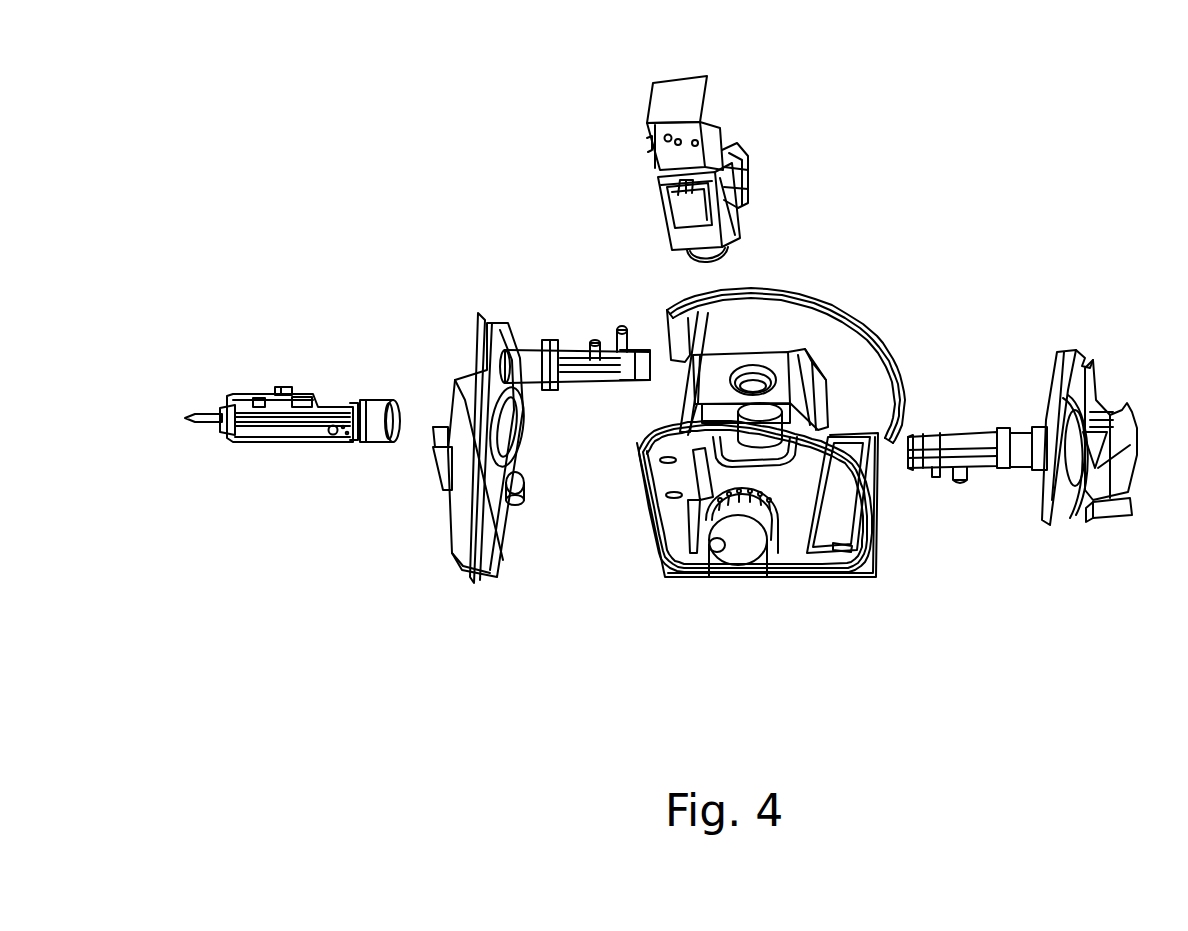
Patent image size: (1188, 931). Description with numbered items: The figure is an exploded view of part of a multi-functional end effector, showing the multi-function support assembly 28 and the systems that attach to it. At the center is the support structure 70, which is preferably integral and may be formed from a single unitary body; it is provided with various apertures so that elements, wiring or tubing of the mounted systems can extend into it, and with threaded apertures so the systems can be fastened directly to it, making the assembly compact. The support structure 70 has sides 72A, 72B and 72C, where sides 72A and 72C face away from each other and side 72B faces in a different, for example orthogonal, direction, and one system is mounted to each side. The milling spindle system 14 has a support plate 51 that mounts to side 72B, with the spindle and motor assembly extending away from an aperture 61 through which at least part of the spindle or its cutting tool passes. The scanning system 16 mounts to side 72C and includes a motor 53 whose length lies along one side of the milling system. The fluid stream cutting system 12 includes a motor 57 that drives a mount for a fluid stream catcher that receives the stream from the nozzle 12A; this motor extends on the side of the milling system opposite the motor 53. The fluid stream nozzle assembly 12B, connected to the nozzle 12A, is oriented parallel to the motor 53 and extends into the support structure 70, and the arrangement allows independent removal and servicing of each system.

The fluid stream cutting system 12 is at (287, 367).
The nozzle 12A is at (205, 416).
The fluid stream nozzle assembly 12B is at (322, 443).
The milling spindle system 14 is at (763, 93).
The scanning system 16 is at (1036, 404).
The multi-function support assembly 28 is at (784, 412).
The support plate 51 is at (750, 165).
The motor 53 is at (1010, 475).
The motor 57 is at (551, 340).
The aperture 61 is at (770, 530).
The support structure 70 is at (757, 325).
The side 72A is at (660, 406).
The side 72B is at (795, 492).
The side 72C is at (840, 384).